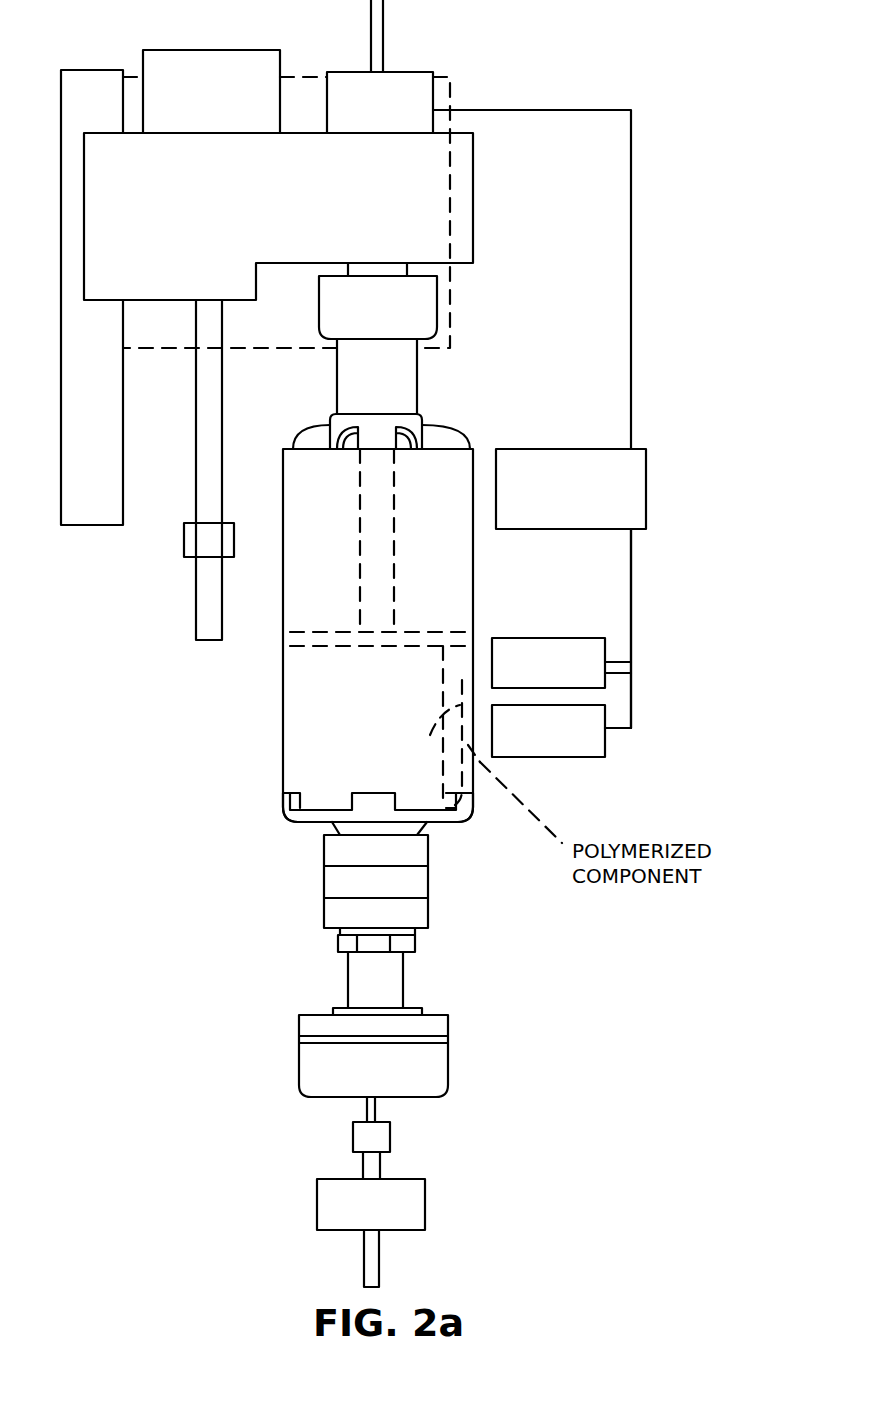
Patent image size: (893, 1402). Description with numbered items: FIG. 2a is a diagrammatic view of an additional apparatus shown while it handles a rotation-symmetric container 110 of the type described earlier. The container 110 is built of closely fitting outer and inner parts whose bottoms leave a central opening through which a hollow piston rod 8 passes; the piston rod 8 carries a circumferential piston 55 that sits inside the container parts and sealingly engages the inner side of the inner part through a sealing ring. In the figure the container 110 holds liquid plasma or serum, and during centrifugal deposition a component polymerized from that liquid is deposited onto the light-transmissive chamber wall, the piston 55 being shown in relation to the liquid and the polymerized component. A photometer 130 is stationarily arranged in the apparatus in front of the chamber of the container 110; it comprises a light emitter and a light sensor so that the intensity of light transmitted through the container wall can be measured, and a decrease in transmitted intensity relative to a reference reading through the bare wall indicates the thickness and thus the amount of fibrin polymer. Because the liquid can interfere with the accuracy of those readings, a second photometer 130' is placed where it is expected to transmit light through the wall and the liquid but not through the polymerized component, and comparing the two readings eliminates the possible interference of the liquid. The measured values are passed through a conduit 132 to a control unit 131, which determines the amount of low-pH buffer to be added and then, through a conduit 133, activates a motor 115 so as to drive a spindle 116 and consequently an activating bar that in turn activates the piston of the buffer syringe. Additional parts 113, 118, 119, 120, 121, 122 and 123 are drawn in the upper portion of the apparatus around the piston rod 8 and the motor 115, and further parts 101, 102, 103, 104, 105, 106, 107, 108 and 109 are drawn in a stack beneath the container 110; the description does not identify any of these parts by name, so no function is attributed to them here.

The hollow piston rod 8 is at (405, 386).
The circumferential piston 55 is at (300, 650).
The vessel bottom 101 is at (458, 812).
The cylinder 102 is at (425, 908).
The seat 103 is at (392, 830).
The shaft 104 is at (390, 978).
The housing 105 is at (432, 1060).
The rod 106 is at (378, 1110).
The coupling 107 is at (386, 1140).
The base block 108 is at (412, 1205).
The rod 109 is at (378, 1170).
The container 110 is at (460, 606).
The coupling 113 is at (425, 306).
The motor 115 is at (425, 106).
The spindle 116 is at (380, 48).
The support block 118 is at (456, 208).
The housing 119 is at (303, 74).
The frame 120 is at (90, 515).
The drive unit 121 is at (218, 68).
The rod 122 is at (200, 496).
The clamp 123 is at (190, 556).
The photometer 130 is at (578, 748).
The second photometer 130' is at (604, 674).
The control unit 131 is at (620, 498).
The conduit 132 is at (631, 598).
The conduit 133 is at (631, 162).